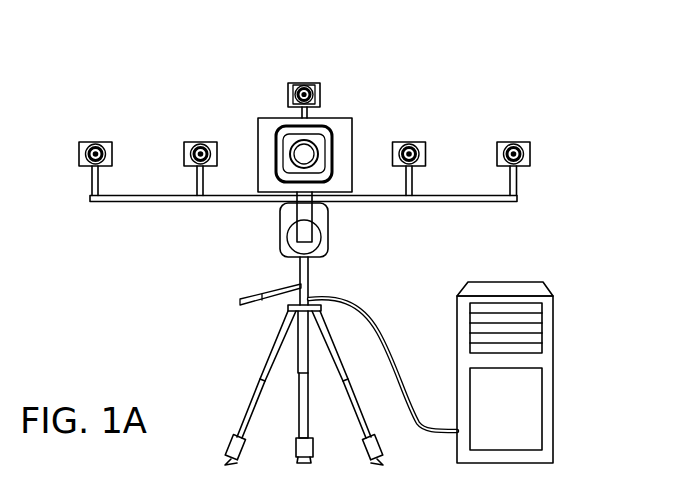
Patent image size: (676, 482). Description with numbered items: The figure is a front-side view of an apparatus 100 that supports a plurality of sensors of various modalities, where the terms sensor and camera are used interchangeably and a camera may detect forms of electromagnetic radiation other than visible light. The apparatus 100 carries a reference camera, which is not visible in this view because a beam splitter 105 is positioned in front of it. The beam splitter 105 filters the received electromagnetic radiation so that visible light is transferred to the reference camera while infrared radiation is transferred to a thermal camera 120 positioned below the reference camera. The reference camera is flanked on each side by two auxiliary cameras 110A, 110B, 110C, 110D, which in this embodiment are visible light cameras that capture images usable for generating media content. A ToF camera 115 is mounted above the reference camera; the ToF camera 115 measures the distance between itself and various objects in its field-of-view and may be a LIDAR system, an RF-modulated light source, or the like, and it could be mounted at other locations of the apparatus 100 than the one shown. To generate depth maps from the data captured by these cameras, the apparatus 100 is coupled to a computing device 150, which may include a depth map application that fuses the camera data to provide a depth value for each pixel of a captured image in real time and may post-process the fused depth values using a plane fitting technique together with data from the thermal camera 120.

The apparatus 100 is at (524, 50).
The beam splitter 105 is at (337, 117).
The auxiliary camera 110A is at (85, 141).
The auxiliary camera 110B is at (190, 141).
The auxiliary camera 110C is at (402, 142).
The auxiliary camera 110D is at (507, 142).
The ToF camera 115 is at (300, 82).
The thermal camera 120 is at (280, 223).
The computing device 150 is at (553, 335).